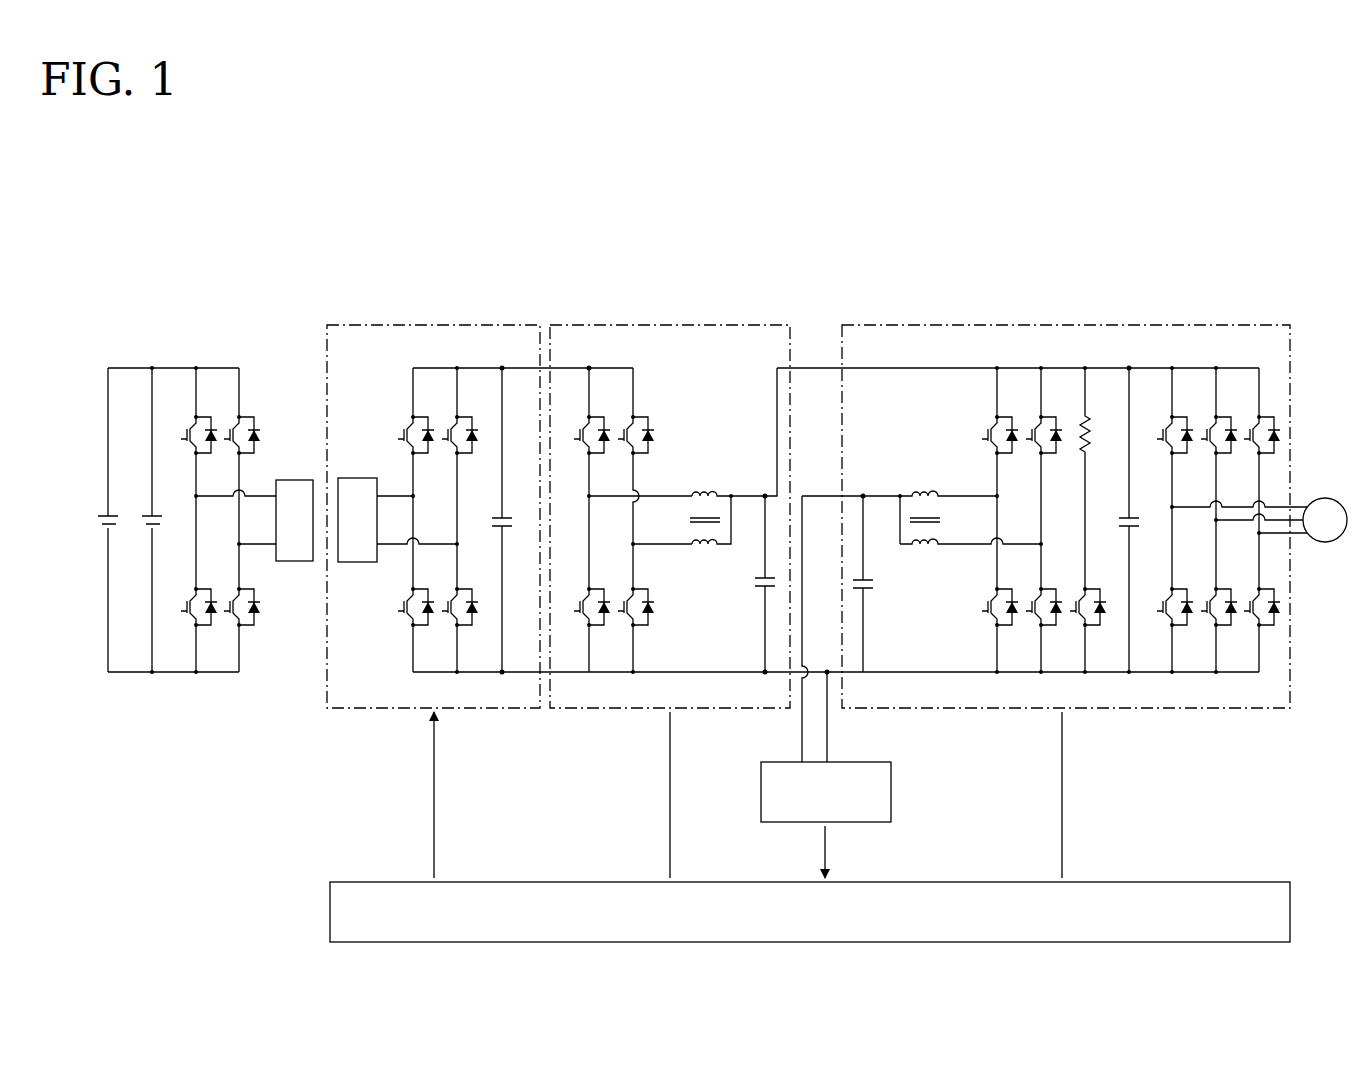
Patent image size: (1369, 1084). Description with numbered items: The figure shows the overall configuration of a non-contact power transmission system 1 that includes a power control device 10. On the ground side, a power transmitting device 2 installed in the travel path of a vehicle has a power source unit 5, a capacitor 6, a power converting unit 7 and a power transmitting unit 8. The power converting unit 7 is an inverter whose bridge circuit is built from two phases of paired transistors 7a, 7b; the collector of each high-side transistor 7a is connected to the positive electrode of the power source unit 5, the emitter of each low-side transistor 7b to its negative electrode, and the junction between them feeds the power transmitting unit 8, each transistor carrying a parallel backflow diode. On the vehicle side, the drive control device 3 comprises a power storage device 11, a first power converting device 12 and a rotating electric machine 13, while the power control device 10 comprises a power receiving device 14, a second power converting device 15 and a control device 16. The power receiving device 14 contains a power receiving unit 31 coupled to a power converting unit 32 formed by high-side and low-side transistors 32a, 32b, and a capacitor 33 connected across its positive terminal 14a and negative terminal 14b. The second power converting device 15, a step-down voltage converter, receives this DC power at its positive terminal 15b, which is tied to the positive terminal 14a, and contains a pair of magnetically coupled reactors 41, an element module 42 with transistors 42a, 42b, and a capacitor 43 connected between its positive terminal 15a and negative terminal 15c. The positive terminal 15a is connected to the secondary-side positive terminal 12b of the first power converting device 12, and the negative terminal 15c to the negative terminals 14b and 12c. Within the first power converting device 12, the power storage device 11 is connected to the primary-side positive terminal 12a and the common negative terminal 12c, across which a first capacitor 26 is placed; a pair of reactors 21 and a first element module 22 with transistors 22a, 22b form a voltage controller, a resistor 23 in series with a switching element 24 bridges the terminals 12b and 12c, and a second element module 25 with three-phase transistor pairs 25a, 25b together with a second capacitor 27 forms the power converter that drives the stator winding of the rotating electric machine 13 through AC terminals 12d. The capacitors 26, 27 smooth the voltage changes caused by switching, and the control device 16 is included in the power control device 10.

The non-contact power transmission system 1 is at (1314, 218).
The power transmitting device 2 is at (288, 318).
The drive control device 3 is at (1286, 280).
The power source unit 5 is at (110, 516).
The capacitor 6 is at (154, 516).
The power converting unit 7 is at (239, 368).
The transistor in high-side arm 7a is at (238, 416).
The transistor in low-side arm 7b is at (239, 626).
The power transmitting unit 8 is at (292, 480).
The power control device 10 is at (762, 252).
The power storage device 11 is at (891, 790).
The first power converting device 12 is at (1292, 345).
The positive terminal on primary side 12a is at (863, 496).
The positive terminal on secondary side 12b is at (1129, 368).
The negative terminal 12c is at (870, 670).
The AC terminal 12d is at (1261, 535).
The rotating electric machine 13 is at (1325, 498).
The power receiving device 14 is at (527, 325).
The positive terminal on secondary side 14a is at (502, 368).
The negative terminal on secondary side 14b is at (502, 672).
The second power converting device 15 is at (722, 325).
The positive terminal on secondary side 15a is at (765, 496).
The positive terminal on primary side 15b is at (589, 368).
The negative terminal 15c is at (765, 672).
The control device 16 is at (1250, 882).
The pair of reactors 21 is at (940, 544).
The first element module 22 is at (1045, 368).
The transistor in high-side arm 22a is at (1041, 417).
The transistor in low-side arm 22b is at (1041, 626).
The resistor 23 is at (1090, 420).
The switching element 24 is at (1085, 590).
The second element module 25 is at (1228, 368).
The transistor in high-side arm 25a is at (1259, 417).
The transistor in low-side arm 25b is at (1259, 626).
The first capacitor 26 is at (872, 592).
The second capacitor 27 is at (1129, 518).
The power receiving unit 31 is at (358, 478).
The power converting unit 32 is at (413, 417).
The transistor in high-side arm 32a is at (457, 417).
The transistor in low-side arm 32b is at (457, 590).
The capacitor 33 is at (502, 518).
The pair of reactors 41 is at (690, 544).
The element module 42 is at (633, 368).
The transistor in high-side arm 42a is at (633, 417).
The transistor in low-side arm 42b is at (633, 626).
The capacitor 43 is at (760, 576).